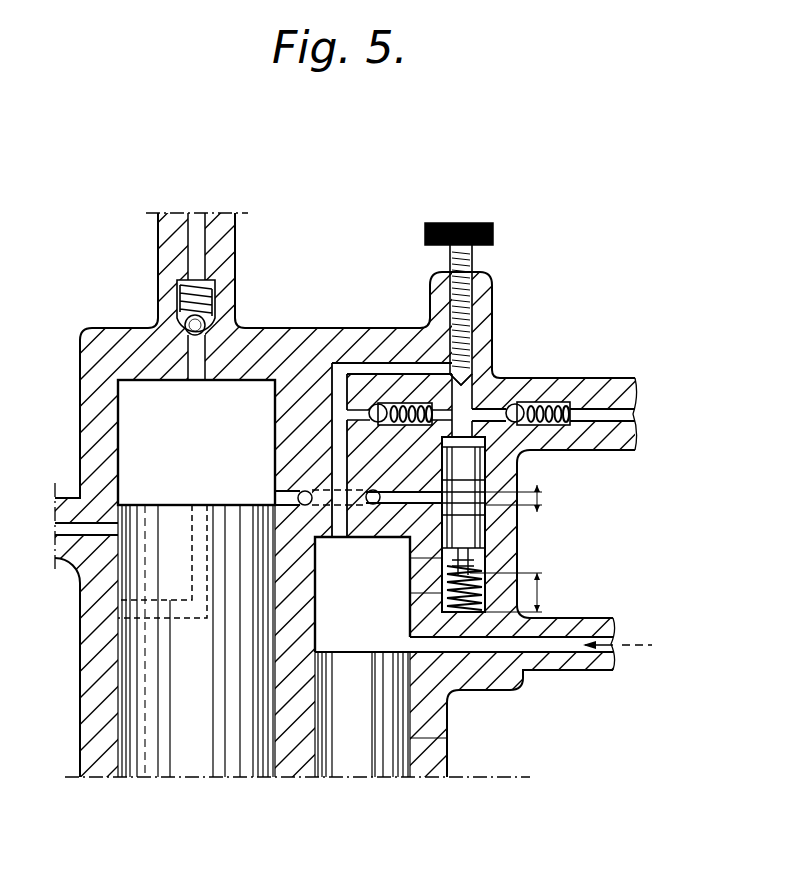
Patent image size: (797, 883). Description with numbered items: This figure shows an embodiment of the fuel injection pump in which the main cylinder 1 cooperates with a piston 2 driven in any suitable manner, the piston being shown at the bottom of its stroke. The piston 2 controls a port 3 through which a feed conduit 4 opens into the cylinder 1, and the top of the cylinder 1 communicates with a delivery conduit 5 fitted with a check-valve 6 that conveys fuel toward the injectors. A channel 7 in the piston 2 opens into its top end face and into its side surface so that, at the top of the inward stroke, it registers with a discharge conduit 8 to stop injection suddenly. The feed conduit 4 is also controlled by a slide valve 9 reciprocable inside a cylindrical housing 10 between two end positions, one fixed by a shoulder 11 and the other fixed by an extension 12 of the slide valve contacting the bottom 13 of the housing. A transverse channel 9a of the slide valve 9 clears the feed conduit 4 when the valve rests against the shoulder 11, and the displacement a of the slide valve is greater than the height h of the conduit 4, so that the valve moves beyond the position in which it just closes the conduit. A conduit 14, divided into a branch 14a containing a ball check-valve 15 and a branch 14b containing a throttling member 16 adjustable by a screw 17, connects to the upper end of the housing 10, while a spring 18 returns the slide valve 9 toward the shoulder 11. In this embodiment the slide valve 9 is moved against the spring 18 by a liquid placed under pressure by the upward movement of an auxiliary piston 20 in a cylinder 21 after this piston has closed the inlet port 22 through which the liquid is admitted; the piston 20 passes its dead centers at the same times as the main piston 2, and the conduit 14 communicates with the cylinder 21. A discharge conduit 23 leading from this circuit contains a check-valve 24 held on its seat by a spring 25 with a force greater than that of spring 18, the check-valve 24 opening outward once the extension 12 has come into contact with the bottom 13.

The cylinder 1 is at (133, 589).
The piston 2 is at (167, 673).
The port 3 is at (276, 499).
The feed conduit 4 is at (293, 498).
The delivery conduit 5 is at (197, 250).
The check-valve 6 is at (207, 322).
The channel 7 is at (197, 581).
The discharge conduit 8 is at (70, 532).
The slide valve 9 is at (490, 468).
The transverse channel 9a is at (486, 504).
The cylindrical housing 10 is at (483, 562).
The shoulder 11 is at (487, 440).
The extension 12 is at (460, 558).
The bottom 13 is at (458, 613).
The conduit 14 is at (345, 453).
The branch 14a is at (362, 412).
The branch 14b is at (410, 368).
The check-valve 15 is at (382, 404).
The throttling member 16 is at (475, 375).
The screw 17 is at (473, 263).
The spring 18 is at (460, 592).
The piston 20 is at (367, 739).
The cylinder 21 is at (408, 684).
The inlet port 22 is at (412, 641).
The discharge conduit 23 is at (510, 404).
The check-valve 24 is at (536, 403).
The spring 25 is at (572, 404).
The height of conduit h is at (520, 498).
The displacement a is at (514, 592).